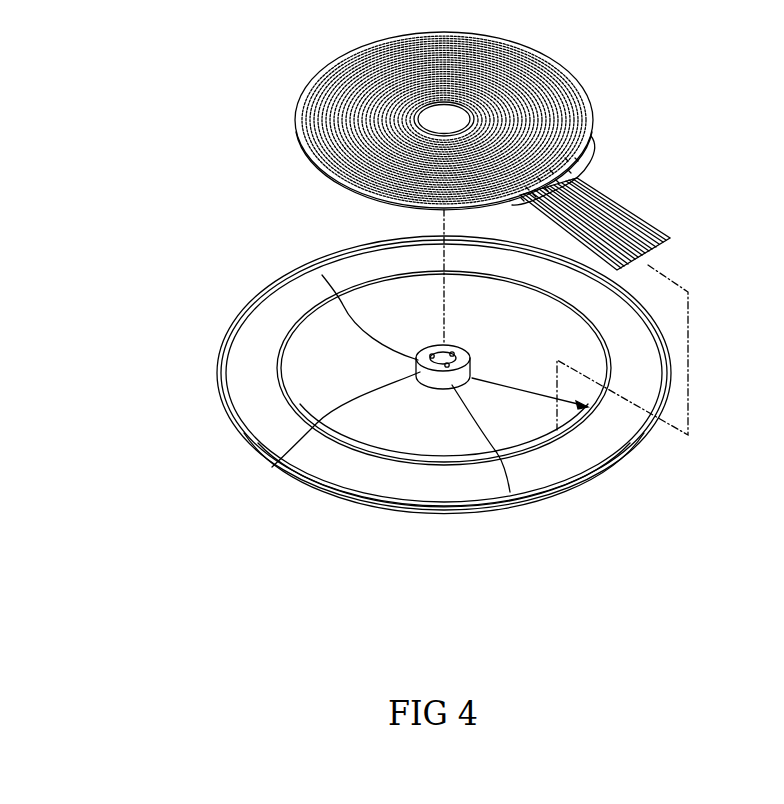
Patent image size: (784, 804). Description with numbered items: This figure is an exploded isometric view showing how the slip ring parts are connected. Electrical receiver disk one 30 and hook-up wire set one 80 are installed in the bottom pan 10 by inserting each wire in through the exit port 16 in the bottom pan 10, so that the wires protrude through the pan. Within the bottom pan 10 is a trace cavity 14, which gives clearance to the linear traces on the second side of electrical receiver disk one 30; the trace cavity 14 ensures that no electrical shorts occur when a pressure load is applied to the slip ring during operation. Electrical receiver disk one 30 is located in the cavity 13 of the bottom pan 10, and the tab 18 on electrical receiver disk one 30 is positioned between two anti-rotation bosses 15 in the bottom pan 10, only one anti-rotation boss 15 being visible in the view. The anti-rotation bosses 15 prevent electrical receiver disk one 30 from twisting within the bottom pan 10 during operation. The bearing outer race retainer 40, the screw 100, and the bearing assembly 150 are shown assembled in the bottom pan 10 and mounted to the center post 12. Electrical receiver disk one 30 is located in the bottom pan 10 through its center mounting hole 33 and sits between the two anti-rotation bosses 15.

The bottom pan 10 is at (215, 383).
The center post 12 is at (270, 468).
The cavity 13 is at (300, 357).
The trace cavity 14 is at (477, 410).
The anti-rotation boss 15 is at (630, 400).
The exit port 16 is at (572, 417).
The tab 18 is at (592, 152).
The electrical receiver disk one 30 is at (586, 92).
The center mounting hole 33 is at (509, 98).
The bearing outer race retainer 40 is at (413, 357).
The hook-up wire set one 80 is at (625, 212).
The screw 100 is at (343, 303).
The bearing assembly 150 is at (413, 425).